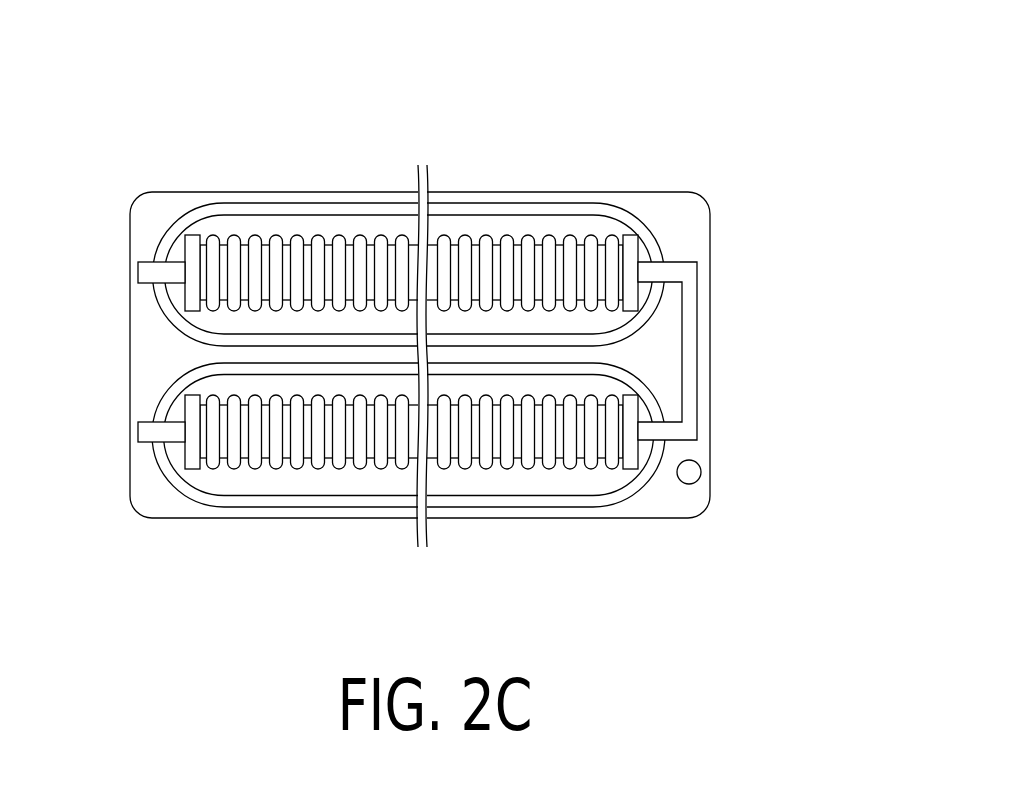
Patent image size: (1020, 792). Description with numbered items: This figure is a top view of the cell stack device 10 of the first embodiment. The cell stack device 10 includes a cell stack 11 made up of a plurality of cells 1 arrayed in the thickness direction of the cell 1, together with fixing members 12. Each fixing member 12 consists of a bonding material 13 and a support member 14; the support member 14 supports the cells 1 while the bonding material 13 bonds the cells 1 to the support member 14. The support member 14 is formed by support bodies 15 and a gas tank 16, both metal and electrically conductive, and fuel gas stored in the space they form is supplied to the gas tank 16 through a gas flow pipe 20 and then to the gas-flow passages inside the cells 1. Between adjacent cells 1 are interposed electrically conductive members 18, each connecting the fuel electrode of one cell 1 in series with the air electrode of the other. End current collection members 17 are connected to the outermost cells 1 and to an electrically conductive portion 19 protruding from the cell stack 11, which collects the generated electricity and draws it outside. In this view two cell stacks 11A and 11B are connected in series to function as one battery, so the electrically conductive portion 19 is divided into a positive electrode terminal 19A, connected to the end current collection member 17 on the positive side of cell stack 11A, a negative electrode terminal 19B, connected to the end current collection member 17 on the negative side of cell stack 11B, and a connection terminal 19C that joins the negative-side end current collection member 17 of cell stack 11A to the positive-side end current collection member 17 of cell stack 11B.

The cell stack device 10 is at (438, 307).
The fixing member 12 is at (478, 336).
The support member 14 is at (478, 376).
The support body 15 is at (647, 240).
The gas tank 16 is at (688, 250).
The end current collection member 17 is at (192, 240).
The electrically conductive member 18 is at (497, 237).
The cell 1 is at (562, 237).
The bonding material 13 is at (600, 222).
The cell stack 11 is at (411, 373).
The cell stack 11A is at (494, 480).
The cell stack 11B is at (345, 226).
The electrically conductive portion 19 is at (422, 371).
The positive electrode terminal 19A is at (148, 432).
The negative electrode terminal 19B is at (148, 272).
The connection terminal 19C is at (688, 395).
The gas flow pipe 20 is at (695, 477).